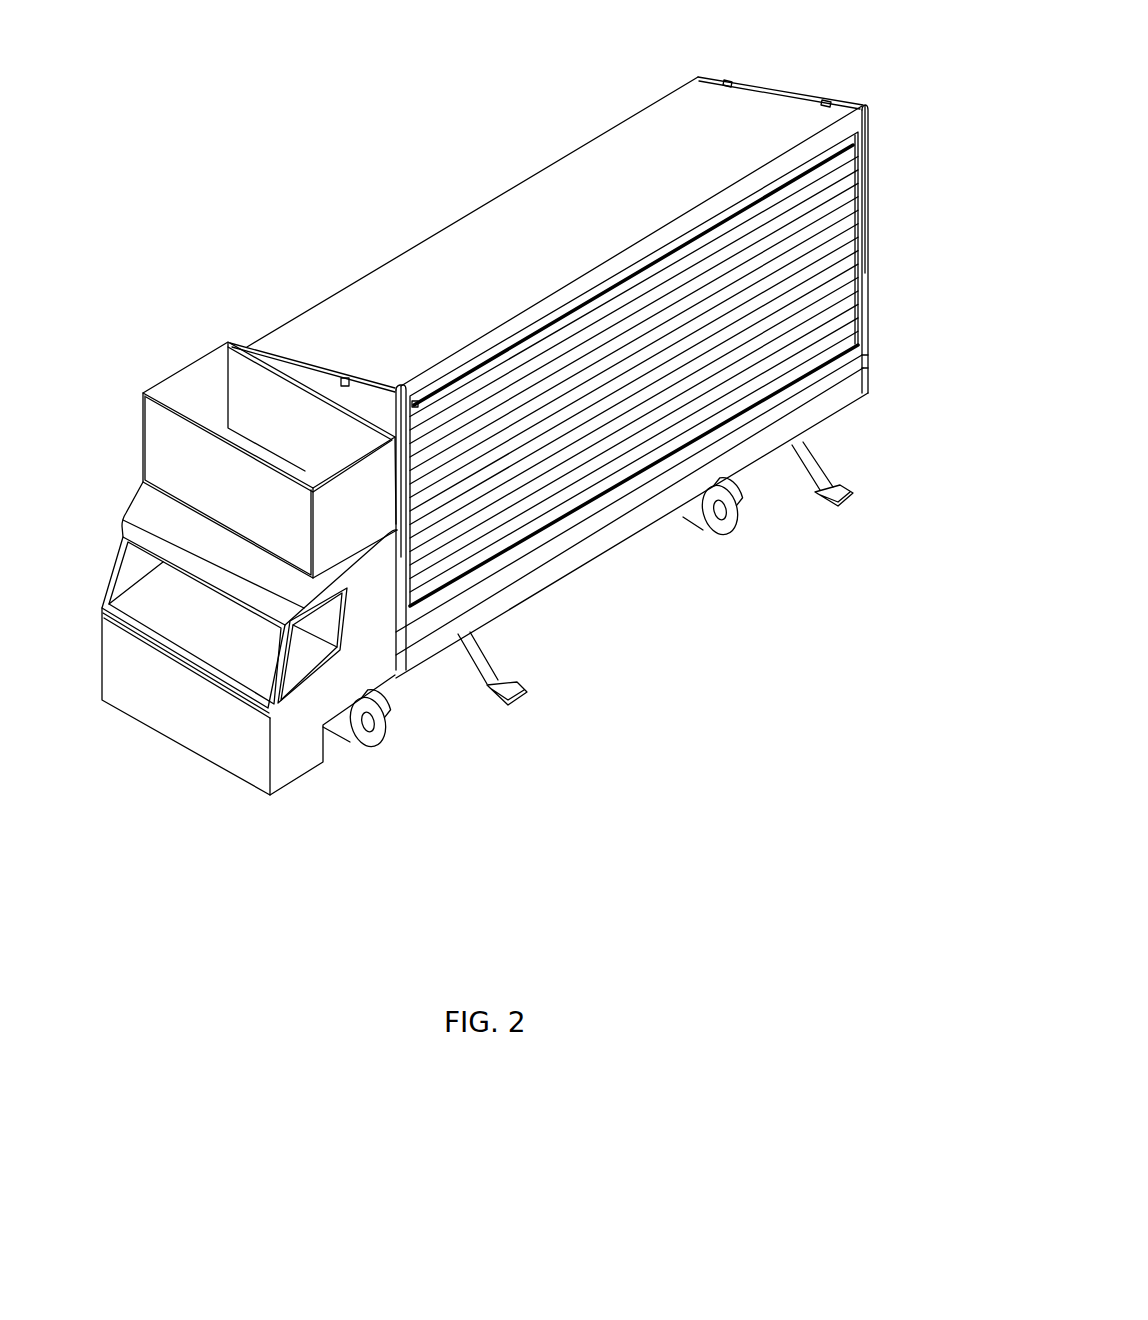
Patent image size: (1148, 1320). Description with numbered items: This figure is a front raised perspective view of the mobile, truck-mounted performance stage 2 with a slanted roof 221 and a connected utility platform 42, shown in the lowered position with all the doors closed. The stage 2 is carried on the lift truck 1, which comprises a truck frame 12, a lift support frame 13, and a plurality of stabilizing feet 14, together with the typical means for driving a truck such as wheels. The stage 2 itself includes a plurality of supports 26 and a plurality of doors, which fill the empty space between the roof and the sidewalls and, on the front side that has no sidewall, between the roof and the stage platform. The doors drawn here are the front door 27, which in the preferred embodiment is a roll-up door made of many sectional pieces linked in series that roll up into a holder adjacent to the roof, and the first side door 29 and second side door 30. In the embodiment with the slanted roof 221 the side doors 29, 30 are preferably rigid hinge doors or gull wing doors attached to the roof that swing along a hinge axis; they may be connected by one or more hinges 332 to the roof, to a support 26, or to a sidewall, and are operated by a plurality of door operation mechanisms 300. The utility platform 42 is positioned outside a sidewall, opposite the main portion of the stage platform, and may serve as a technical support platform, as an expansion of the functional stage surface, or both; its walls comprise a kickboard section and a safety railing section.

The lift truck 1 is at (334, 776).
The performance stage 2 is at (568, 366).
The truck frame 12 is at (612, 538).
The lift support frame 13 is at (863, 370).
The stabilizing feet 14 is at (823, 495).
The supports 26 is at (400, 387).
The front door 27 is at (677, 262).
The first side door 29 is at (265, 430).
The second side door 30 is at (870, 194).
The utility platform 42 is at (177, 382).
The slanted roof 221 is at (532, 187).
The door operation mechanisms 300 is at (830, 100).
The hinges 332 is at (726, 80).